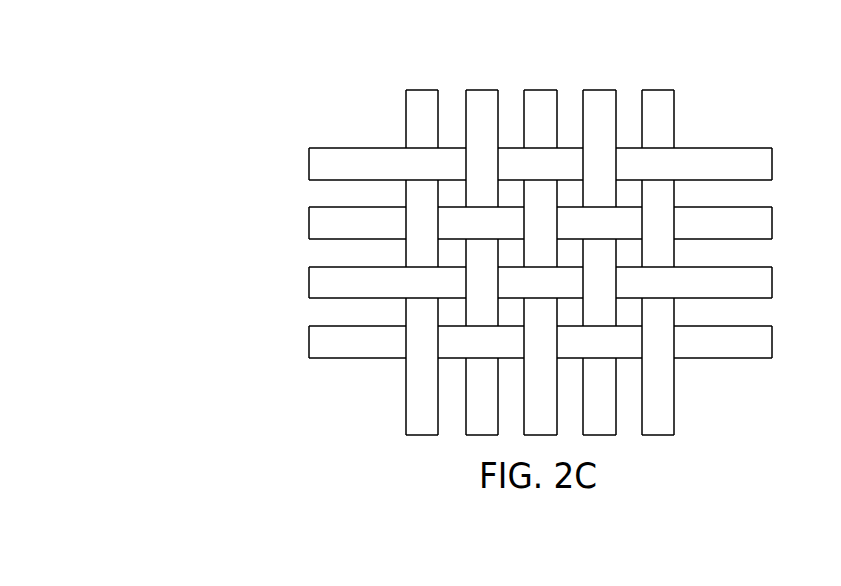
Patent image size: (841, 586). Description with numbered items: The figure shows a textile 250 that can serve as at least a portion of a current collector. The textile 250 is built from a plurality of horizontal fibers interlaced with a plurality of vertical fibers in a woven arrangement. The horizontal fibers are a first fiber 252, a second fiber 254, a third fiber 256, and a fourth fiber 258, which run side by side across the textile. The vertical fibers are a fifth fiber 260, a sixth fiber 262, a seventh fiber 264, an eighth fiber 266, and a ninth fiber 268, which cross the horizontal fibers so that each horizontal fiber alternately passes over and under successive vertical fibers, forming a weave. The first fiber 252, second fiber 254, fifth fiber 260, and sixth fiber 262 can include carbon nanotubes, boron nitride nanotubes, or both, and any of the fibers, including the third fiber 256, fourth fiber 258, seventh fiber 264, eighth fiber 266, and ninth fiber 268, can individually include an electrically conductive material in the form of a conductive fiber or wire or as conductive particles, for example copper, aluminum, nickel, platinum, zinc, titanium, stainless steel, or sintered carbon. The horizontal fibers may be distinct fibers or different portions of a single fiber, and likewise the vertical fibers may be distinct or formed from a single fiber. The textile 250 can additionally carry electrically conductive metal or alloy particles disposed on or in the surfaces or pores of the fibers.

The textile 250 is at (197, 100).
The first fiber 252 is at (309, 168).
The second fiber 254 is at (309, 227).
The third fiber 256 is at (309, 286).
The fourth fiber 258 is at (309, 345).
The fifth fiber 260 is at (421, 90).
The sixth fiber 262 is at (480, 90).
The seventh fiber 264 is at (541, 90).
The eighth fiber 266 is at (597, 90).
The ninth fiber 268 is at (656, 90).